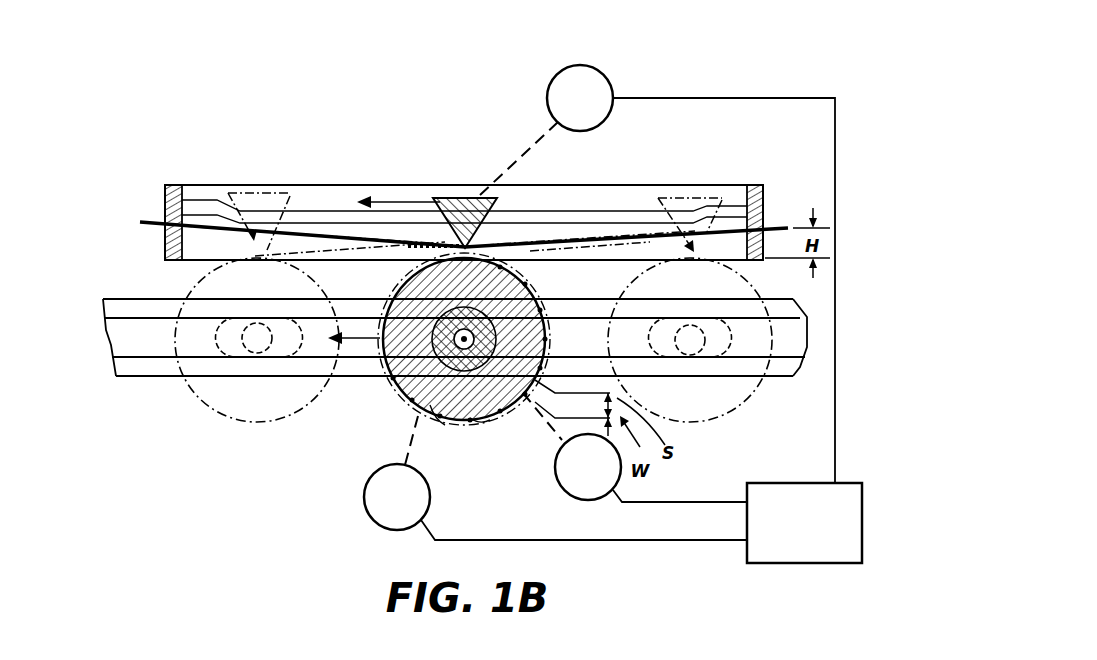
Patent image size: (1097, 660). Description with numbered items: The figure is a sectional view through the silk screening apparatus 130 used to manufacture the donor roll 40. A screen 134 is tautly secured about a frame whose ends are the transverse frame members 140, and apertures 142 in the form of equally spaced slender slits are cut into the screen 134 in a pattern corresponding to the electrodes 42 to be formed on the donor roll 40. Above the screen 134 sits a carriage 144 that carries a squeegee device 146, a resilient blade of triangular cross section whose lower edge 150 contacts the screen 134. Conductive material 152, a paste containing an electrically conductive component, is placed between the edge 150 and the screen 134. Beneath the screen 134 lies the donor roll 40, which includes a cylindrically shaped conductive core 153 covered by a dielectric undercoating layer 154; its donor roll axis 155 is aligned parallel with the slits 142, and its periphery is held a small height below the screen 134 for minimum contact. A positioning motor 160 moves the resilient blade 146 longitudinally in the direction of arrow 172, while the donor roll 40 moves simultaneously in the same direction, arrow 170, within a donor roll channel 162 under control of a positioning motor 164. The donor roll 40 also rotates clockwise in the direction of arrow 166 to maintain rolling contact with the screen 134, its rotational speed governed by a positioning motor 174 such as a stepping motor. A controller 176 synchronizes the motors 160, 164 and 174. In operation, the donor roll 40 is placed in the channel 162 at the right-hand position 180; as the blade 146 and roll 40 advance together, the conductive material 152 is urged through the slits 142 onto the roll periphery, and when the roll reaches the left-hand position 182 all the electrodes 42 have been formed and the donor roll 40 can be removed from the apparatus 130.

The silk screening apparatus 130 is at (149, 132).
The screen 134 is at (732, 236).
The transverse frame members 140 is at (183, 198).
The apertures 142 is at (627, 238).
The carriage 144 is at (447, 129).
The squeegee device 146 is at (470, 195).
The lower edge 150 is at (508, 237).
The conductive material 152 is at (435, 198).
The core 153 is at (452, 412).
The dielectric undercoating layer 154 is at (484, 420).
The donor roll axis 155 is at (543, 296).
The positioning motor 160 is at (608, 75).
The donor roll channel 162 is at (797, 347).
The positioning motor 164 is at (375, 520).
The arrow 166 is at (400, 302).
The arrow 170 is at (353, 327).
The arrow 172 is at (376, 198).
The positioning motor 174 is at (562, 490).
The controller 176 is at (804, 523).
The right-hand position 180 is at (716, 428).
The left-hand position 182 is at (193, 405).
The donor roll 40 is at (369, 394).
The electrodes 42 is at (516, 410).